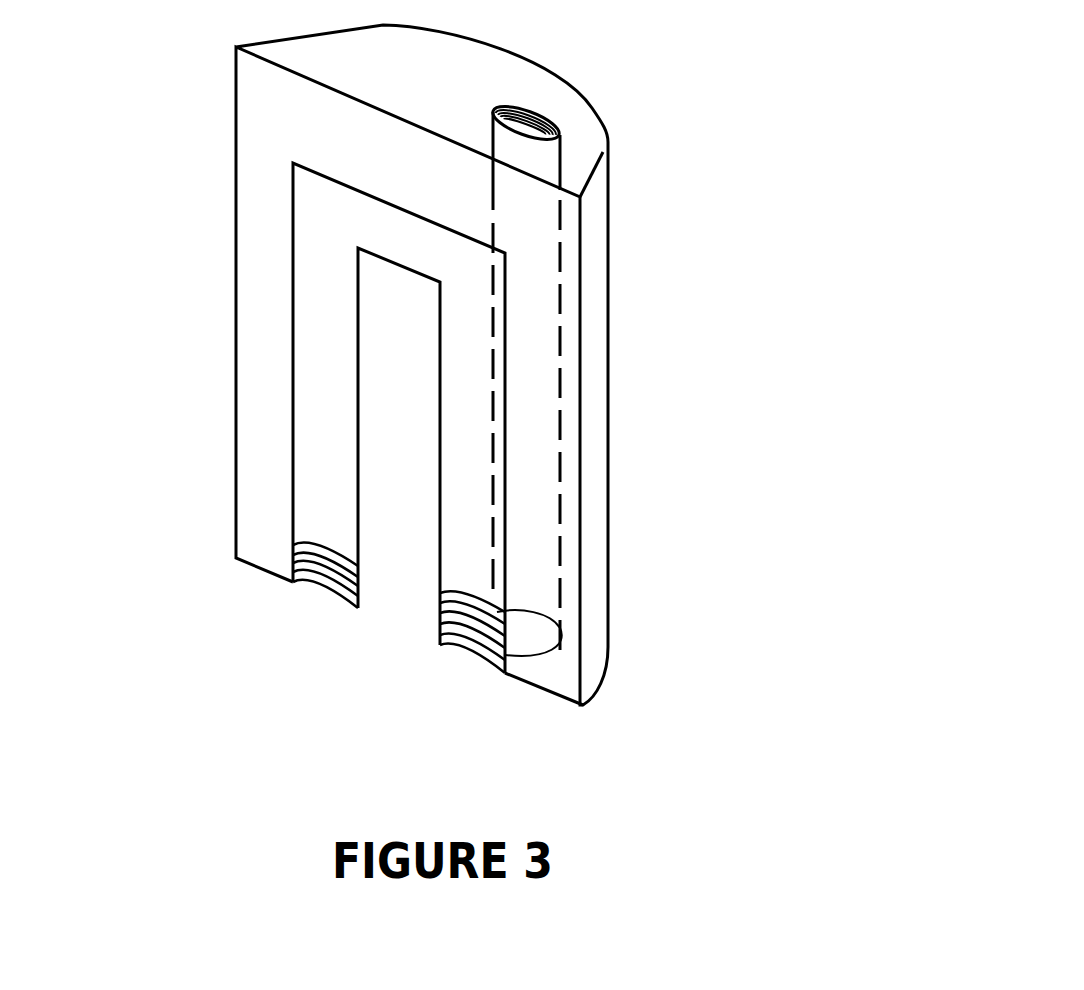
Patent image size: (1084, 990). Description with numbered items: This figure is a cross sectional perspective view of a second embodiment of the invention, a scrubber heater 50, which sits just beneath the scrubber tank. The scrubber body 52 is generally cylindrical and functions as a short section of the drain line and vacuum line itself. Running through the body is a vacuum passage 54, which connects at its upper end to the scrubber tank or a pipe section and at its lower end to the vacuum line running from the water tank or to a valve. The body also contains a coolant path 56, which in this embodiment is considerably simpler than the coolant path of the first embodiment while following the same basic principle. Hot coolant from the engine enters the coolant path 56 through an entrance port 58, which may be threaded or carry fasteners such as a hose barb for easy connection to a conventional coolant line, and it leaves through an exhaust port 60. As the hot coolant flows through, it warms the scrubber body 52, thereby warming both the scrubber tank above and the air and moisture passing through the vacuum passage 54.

The scrubber heater 50 is at (492, 396).
The scrubber body 52 is at (406, 409).
The vacuum passage 54 is at (560, 132).
The coolant path 56 is at (321, 478).
The entrance port 58 is at (477, 647).
The exhaust port 60 is at (330, 585).